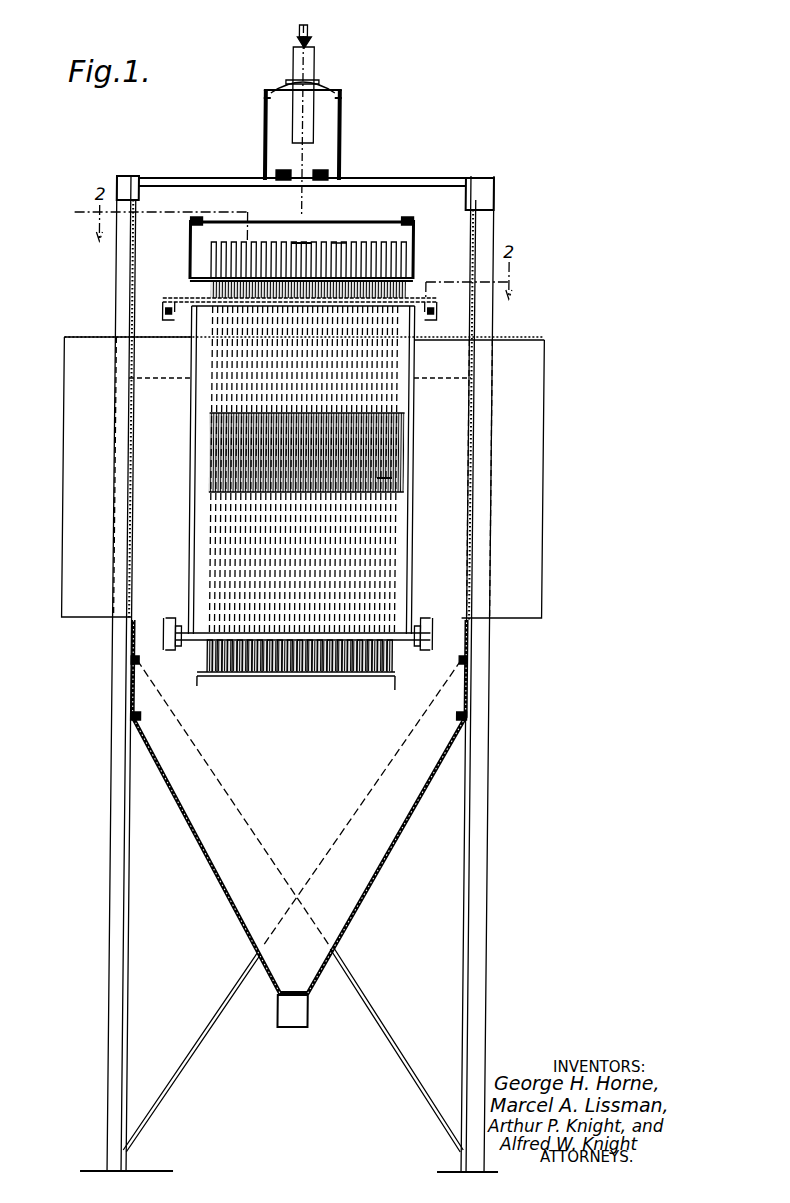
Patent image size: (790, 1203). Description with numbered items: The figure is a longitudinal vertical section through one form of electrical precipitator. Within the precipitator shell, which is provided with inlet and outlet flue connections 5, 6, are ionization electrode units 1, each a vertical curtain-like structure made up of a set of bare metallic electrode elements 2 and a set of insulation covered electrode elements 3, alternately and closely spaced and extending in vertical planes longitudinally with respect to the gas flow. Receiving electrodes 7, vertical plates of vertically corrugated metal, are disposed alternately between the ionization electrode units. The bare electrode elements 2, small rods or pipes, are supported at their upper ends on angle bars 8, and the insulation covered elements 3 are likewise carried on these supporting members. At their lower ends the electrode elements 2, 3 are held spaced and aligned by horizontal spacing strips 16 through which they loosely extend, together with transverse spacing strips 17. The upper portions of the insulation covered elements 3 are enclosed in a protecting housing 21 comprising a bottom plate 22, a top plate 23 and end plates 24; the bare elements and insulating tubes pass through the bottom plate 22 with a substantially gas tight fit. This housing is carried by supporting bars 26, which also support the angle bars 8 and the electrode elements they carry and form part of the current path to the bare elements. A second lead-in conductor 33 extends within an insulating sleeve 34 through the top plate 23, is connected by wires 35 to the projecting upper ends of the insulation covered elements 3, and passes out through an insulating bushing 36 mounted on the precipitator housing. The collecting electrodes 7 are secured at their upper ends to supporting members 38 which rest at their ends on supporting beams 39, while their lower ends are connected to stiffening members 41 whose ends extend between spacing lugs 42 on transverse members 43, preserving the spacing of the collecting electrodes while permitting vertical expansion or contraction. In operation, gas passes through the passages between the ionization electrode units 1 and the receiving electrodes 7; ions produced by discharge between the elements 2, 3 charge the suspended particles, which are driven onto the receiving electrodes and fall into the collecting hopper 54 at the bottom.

The ionization electrode unit 1 is at (410, 464).
The bare metallic electrode elements 2 is at (388, 438).
The insulation covered electrode elements 3 is at (390, 484).
The inlet flue connection 5 is at (74, 480).
The outlet flue connection 6 is at (532, 490).
The receiving electrodes 7 is at (198, 408).
The angle bars 8 is at (201, 270).
The horizontal spacing strips 16 is at (399, 682).
The transverse spacing strips 17 is at (386, 678).
The protecting housing 21 is at (416, 252).
The bottom plate 22 is at (414, 282).
The top plate 23 is at (358, 224).
The end plates 24 is at (191, 256).
The supporting bars 26 is at (190, 224).
The second lead-in conductor 33 is at (306, 28).
The insulating sleeve 34 is at (300, 242).
The wires 35 is at (338, 247).
The insulating bushing 36 is at (318, 90).
The supporting members 38 is at (164, 297).
The supporting beams 39 is at (162, 310).
The stiffening members 41 is at (199, 638).
The spacing lugs 42 is at (182, 626).
The transverse members 43 is at (436, 612).
The collecting hopper 54 is at (420, 808).